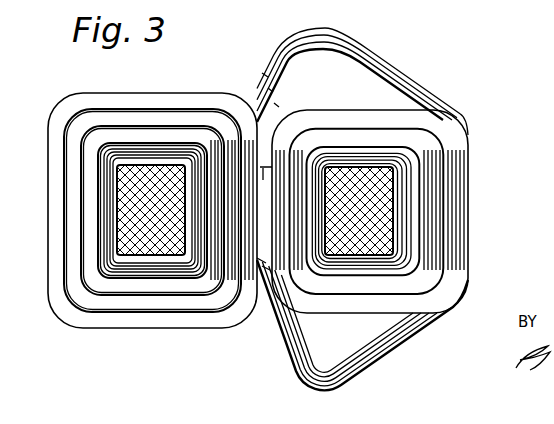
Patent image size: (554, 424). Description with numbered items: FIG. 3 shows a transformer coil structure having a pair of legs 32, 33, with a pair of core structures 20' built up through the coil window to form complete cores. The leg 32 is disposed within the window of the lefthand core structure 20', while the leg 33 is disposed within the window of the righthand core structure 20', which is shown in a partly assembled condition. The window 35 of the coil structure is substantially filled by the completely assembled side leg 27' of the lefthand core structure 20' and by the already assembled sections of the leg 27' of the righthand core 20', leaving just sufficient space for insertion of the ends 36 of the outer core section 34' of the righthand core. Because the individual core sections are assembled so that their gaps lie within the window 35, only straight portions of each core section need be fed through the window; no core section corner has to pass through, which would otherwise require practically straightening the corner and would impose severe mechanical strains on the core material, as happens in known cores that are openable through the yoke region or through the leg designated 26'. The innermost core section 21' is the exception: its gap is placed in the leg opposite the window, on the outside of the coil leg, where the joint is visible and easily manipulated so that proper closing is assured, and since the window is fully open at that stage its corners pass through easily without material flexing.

The core structure 20' is at (266, 198).
The innermost core section 21' is at (254, 173).
The core leg 26' is at (267, 210).
The side leg 27' is at (255, 210).
The leg 32 is at (118, 183).
The leg 33 is at (389, 184).
The outer core section 34' is at (286, 209).
The window 35 is at (263, 178).
The ends 36 is at (279, 64).